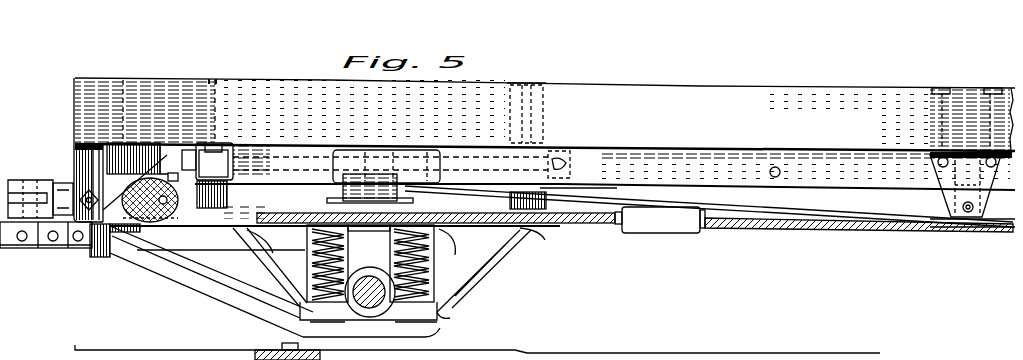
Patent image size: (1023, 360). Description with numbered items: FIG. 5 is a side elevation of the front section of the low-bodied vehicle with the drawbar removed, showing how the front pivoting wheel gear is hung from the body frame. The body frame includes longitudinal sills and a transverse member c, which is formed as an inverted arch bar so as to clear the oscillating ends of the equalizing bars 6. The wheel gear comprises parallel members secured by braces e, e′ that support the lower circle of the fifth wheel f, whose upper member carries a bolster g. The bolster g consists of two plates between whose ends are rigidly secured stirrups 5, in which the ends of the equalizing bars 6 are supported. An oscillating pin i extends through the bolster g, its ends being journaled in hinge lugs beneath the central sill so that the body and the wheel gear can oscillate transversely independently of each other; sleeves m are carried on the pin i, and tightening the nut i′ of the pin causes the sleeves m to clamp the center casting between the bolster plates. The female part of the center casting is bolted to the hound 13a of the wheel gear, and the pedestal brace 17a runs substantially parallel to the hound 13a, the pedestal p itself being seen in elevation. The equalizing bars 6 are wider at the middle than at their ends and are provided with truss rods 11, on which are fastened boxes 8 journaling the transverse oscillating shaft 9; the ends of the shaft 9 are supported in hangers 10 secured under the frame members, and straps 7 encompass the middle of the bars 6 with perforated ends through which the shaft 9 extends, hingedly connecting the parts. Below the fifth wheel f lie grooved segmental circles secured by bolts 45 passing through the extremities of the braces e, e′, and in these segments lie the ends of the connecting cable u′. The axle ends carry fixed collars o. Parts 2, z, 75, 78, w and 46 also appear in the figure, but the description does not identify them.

The equalizing bar 6 is at (110, 92).
The transverse member c is at (540, 102).
The sleeve m is at (316, 150).
The stirrup 5 is at (386, 168).
The nut i′ is at (560, 152).
The oscillating pin i is at (567, 167).
The bearing box 2 is at (233, 141).
The lever z is at (181, 198).
The bracket 75 is at (40, 188).
The rail 78 is at (70, 248).
The hound 13a is at (335, 240).
The connecting cable u′ is at (778, 226).
The truss rod 11 is at (881, 228).
The strap 7 is at (953, 183).
The hanger 10 is at (934, 160).
The box 8 is at (953, 219).
The transverse oscillating shaft 9 is at (968, 213).
The fifth wheel f is at (563, 202).
The bolster g is at (316, 263).
The pedestal p is at (391, 263).
The hub w is at (390, 317).
The fixed collar o is at (367, 308).
The brace e is at (270, 267).
The brace e′ is at (467, 273).
The bolt 45 is at (247, 231).
The pedestal brace 17a is at (180, 280).
The bottom plate 46 is at (282, 333).